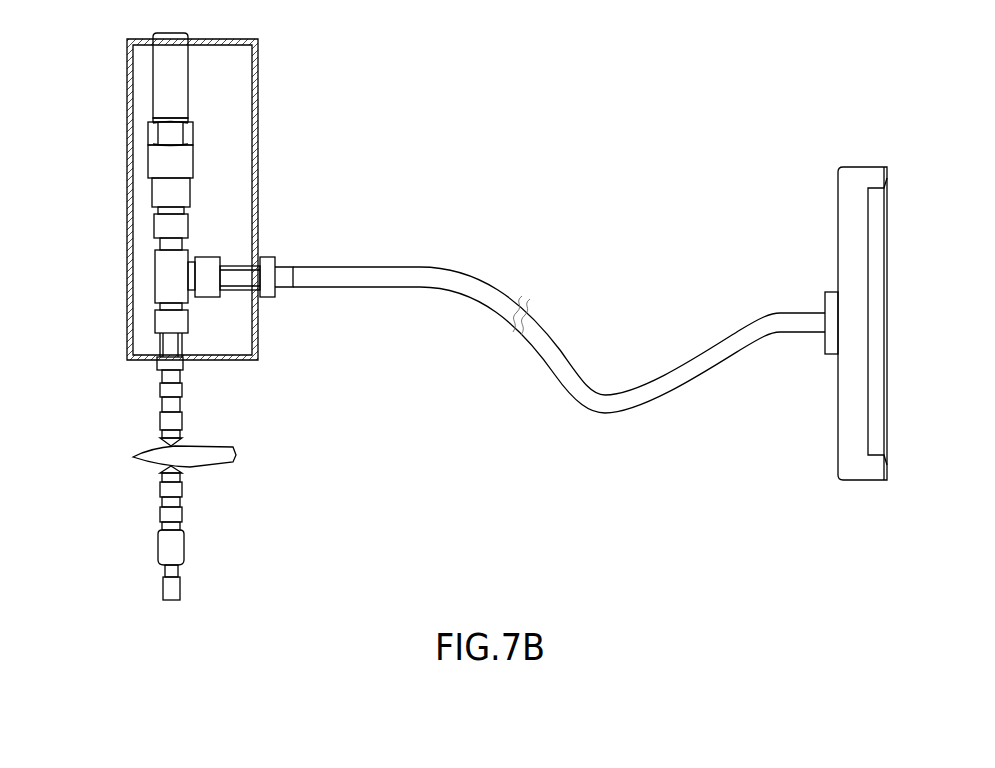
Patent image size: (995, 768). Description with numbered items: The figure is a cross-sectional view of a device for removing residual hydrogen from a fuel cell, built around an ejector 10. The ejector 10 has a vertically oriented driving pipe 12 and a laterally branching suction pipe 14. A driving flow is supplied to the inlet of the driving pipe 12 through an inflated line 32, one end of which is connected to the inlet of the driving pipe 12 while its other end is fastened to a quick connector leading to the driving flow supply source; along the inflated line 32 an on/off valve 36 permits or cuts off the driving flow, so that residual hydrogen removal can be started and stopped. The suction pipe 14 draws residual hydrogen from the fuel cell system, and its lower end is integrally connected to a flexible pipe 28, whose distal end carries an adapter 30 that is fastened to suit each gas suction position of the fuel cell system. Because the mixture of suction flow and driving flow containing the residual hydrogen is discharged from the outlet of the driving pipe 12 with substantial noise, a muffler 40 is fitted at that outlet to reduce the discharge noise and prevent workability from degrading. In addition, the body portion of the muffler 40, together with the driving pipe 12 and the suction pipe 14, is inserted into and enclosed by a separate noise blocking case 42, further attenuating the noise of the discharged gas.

The ejector 10 is at (160, 268).
The driving pipe 12 is at (160, 291).
The suction pipe 14 is at (232, 254).
The flexible pipe 28 is at (424, 272).
The adapter 30 is at (848, 218).
The inflated line 32 is at (178, 500).
The on/off valve 36 is at (205, 450).
The muffler 40 is at (160, 73).
The case 42 is at (257, 138).